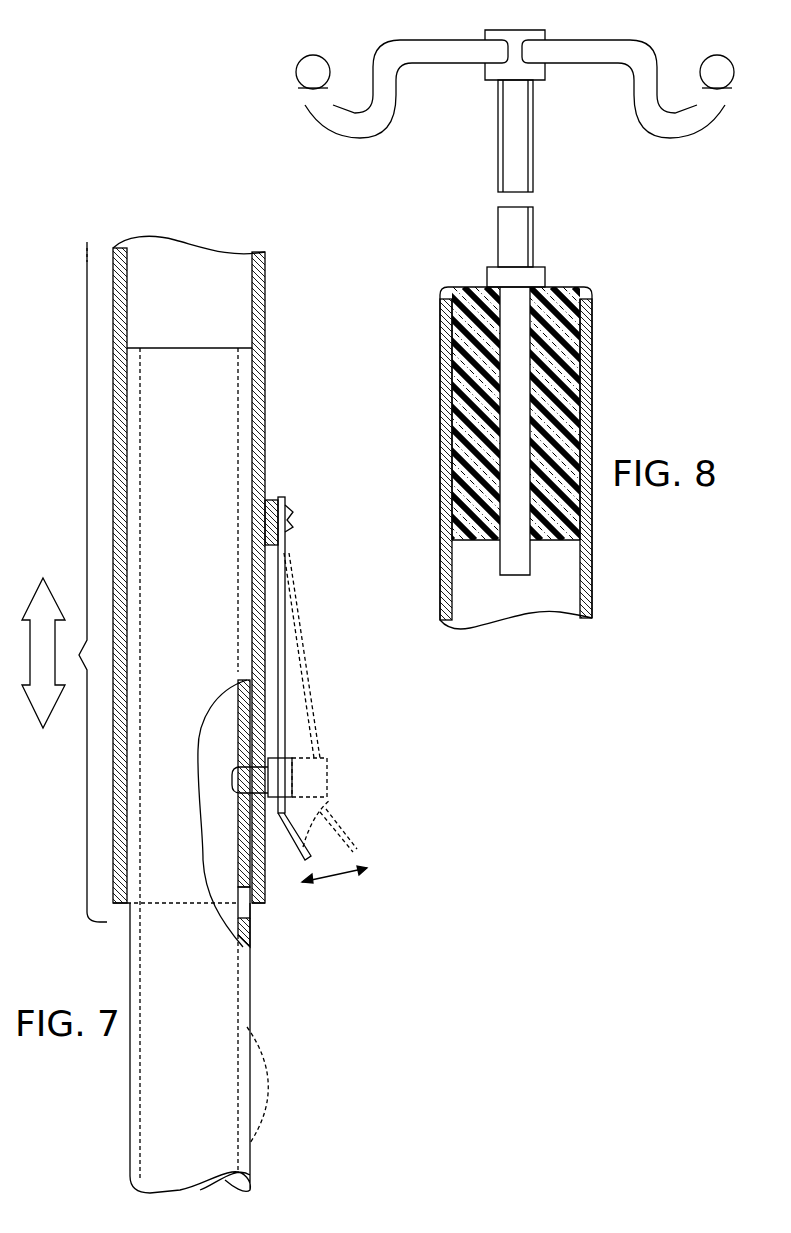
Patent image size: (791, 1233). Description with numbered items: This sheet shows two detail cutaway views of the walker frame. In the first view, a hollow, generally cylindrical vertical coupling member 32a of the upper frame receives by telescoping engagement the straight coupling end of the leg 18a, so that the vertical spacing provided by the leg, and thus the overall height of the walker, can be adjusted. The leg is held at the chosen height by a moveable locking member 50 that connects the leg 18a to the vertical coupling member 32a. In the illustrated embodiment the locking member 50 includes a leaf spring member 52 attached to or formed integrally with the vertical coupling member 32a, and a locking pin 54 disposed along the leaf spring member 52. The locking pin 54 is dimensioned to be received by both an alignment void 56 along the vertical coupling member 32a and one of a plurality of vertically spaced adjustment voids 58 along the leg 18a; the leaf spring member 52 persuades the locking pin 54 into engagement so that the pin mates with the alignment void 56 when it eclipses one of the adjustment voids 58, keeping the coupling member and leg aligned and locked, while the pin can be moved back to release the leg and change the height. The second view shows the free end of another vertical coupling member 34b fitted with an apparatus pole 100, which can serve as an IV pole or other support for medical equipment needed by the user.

In FIG. 7, the leg 18a is at (147, 1090).
In FIG. 7, the vertical coupling member 32a is at (265, 346).
In FIG. 8, the vertical coupling member 34b is at (592, 382).
In FIG. 7, the moveable locking member 50 is at (324, 737).
In FIG. 7, the leaf spring member 52 is at (322, 813).
In FIG. 7, the locking pin 54 is at (245, 781).
In FIG. 7, the alignment void 56 is at (254, 890).
In FIG. 7, the adjustment void 58 is at (268, 1085).
In FIG. 8, the apparatus pole 100 is at (520, 230).